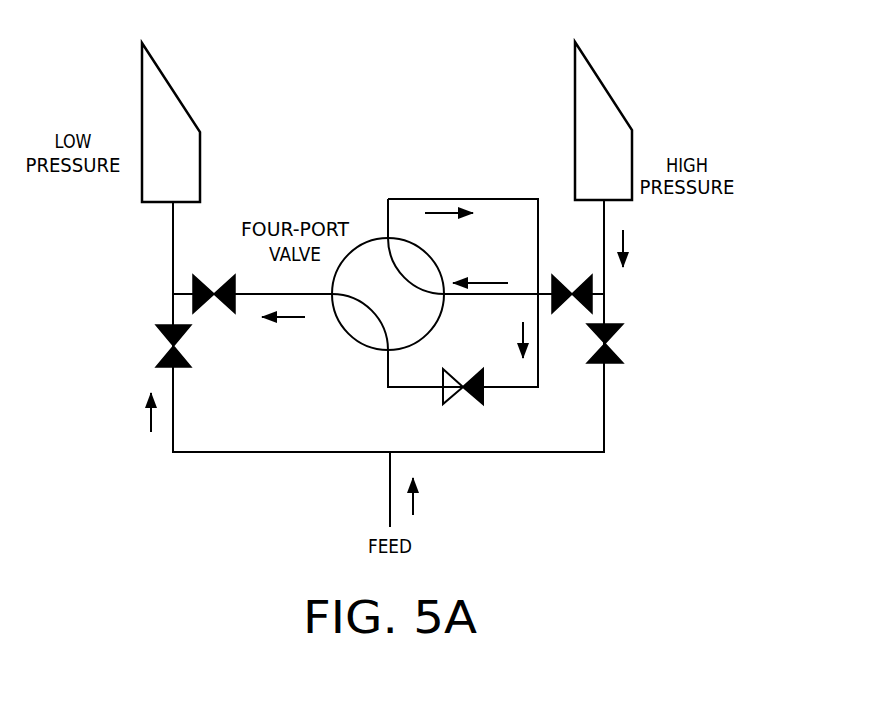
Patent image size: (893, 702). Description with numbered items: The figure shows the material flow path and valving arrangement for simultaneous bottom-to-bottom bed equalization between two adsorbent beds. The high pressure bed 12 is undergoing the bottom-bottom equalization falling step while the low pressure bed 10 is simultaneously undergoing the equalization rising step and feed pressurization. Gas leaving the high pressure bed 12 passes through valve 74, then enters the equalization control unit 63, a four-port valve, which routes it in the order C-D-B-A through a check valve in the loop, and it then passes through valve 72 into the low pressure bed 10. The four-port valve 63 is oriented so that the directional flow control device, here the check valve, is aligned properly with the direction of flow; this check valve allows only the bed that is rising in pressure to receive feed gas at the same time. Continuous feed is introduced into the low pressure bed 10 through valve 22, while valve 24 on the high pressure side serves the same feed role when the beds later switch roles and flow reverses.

The bed 10 is at (200, 157).
The bed 12 is at (632, 137).
The valve 22 is at (165, 344).
The valve 24 is at (620, 338).
The equalization control unit 63 is at (380, 238).
The valve 72 is at (200, 277).
The valve 74 is at (582, 280).